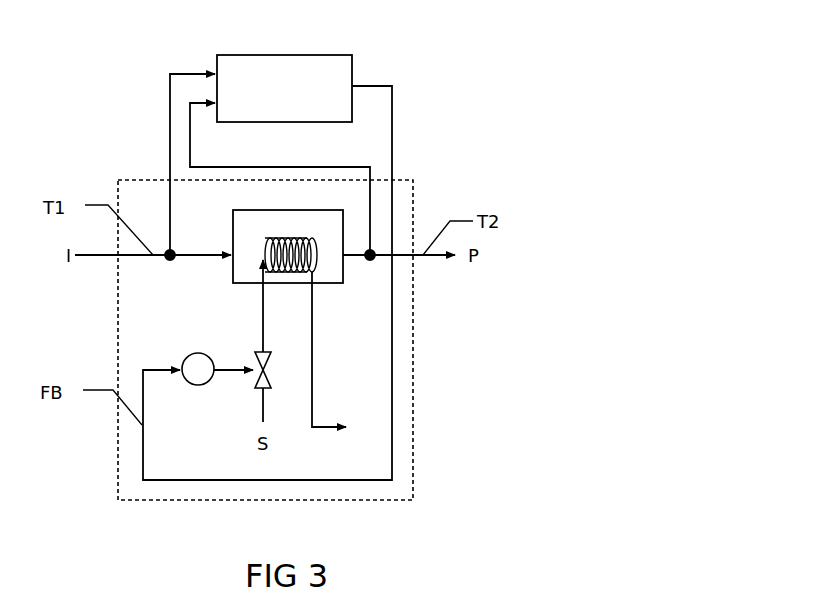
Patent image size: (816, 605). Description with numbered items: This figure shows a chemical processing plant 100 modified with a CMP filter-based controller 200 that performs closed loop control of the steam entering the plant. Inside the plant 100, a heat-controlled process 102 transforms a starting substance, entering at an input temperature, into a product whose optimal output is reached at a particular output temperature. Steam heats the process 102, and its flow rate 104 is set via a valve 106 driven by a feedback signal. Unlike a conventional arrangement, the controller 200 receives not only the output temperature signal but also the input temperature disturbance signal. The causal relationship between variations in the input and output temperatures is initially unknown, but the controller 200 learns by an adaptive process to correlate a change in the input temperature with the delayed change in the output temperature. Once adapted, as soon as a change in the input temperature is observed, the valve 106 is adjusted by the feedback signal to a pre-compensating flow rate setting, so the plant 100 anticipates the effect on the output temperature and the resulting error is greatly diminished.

The plant 100 is at (413, 373).
The process 102 is at (343, 276).
The flow rate 104 is at (185, 355).
The valve 106 is at (257, 357).
The controller 200 is at (352, 62).